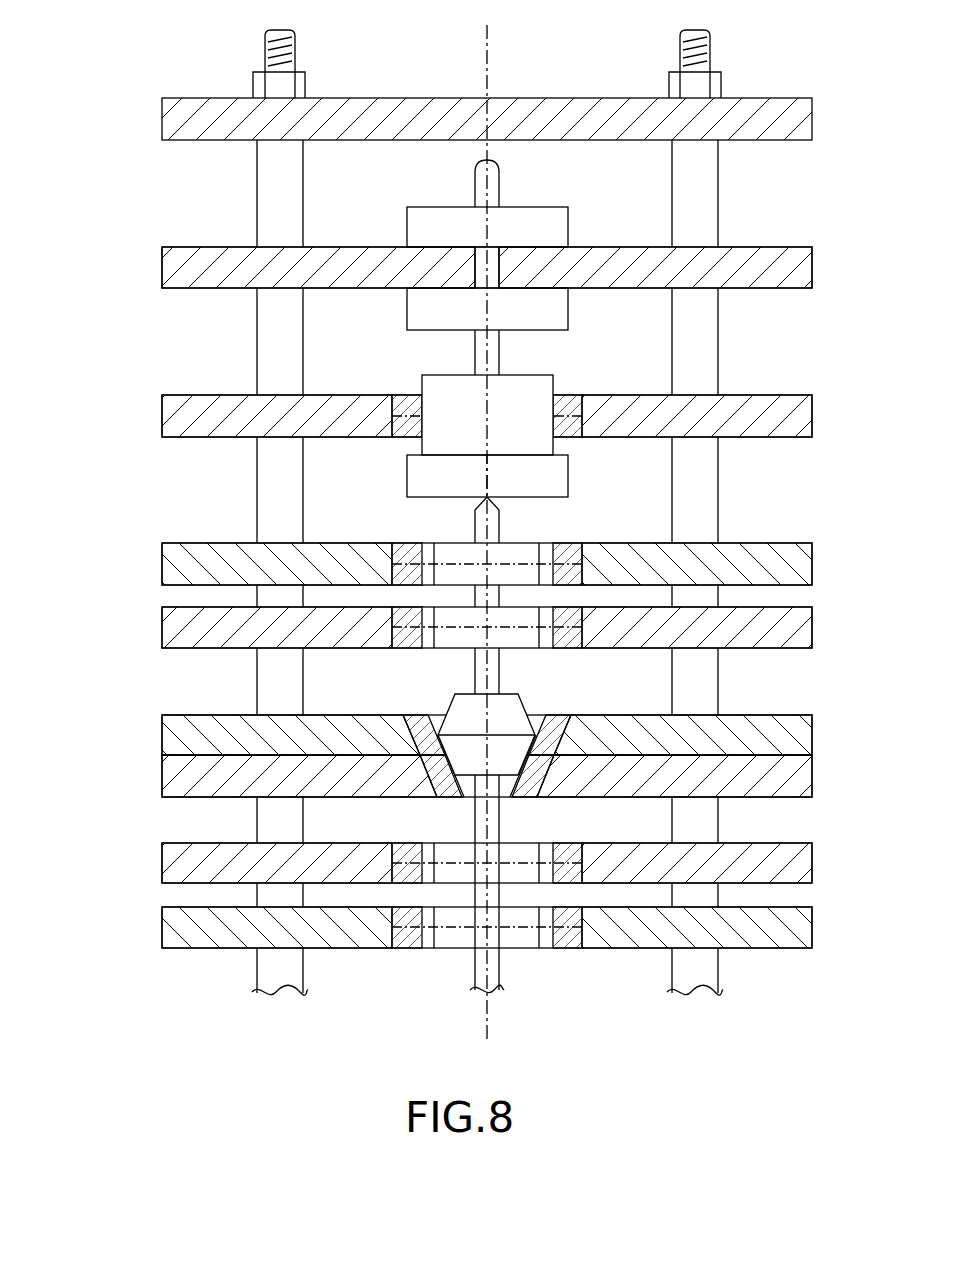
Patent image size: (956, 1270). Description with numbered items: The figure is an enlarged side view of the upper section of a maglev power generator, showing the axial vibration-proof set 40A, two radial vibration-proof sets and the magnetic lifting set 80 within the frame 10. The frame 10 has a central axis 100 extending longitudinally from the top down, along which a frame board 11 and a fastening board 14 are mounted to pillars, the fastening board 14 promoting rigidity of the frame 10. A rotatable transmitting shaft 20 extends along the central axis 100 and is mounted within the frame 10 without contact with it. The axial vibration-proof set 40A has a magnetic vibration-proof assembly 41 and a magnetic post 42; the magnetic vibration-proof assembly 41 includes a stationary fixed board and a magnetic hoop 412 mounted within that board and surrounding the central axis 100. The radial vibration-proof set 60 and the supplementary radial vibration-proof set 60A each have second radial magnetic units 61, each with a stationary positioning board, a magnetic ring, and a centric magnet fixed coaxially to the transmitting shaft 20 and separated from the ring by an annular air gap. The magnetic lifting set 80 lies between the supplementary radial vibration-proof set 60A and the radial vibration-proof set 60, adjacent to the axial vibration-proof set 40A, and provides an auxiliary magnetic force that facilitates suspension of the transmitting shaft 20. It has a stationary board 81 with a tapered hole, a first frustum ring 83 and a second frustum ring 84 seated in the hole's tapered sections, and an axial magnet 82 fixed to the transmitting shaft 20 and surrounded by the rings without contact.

The frame 10 is at (508, 77).
The fastening board 14 is at (205, 98).
The frame board 11 is at (207, 247).
The central axis 100 is at (489, 36).
The transmitting shaft 20 is at (501, 670).
The axial vibration-proof set 40A is at (445, 411).
The magnetic vibration-proof assembly 41 is at (766, 392).
The magnetic hoop 412 is at (570, 392).
The magnetic post 42 is at (418, 372).
The radial vibration-proof set 60 is at (117, 545).
The supplementary radial vibration-proof set 60A is at (118, 898).
The second radial magnetic unit 61 is at (172, 537).
The magnetic lifting set 80 is at (428, 746).
The board 81 is at (160, 723).
The axial magnet 82 is at (447, 696).
The first frustum ring 83 is at (405, 711).
The second frustum ring 84 is at (445, 799).